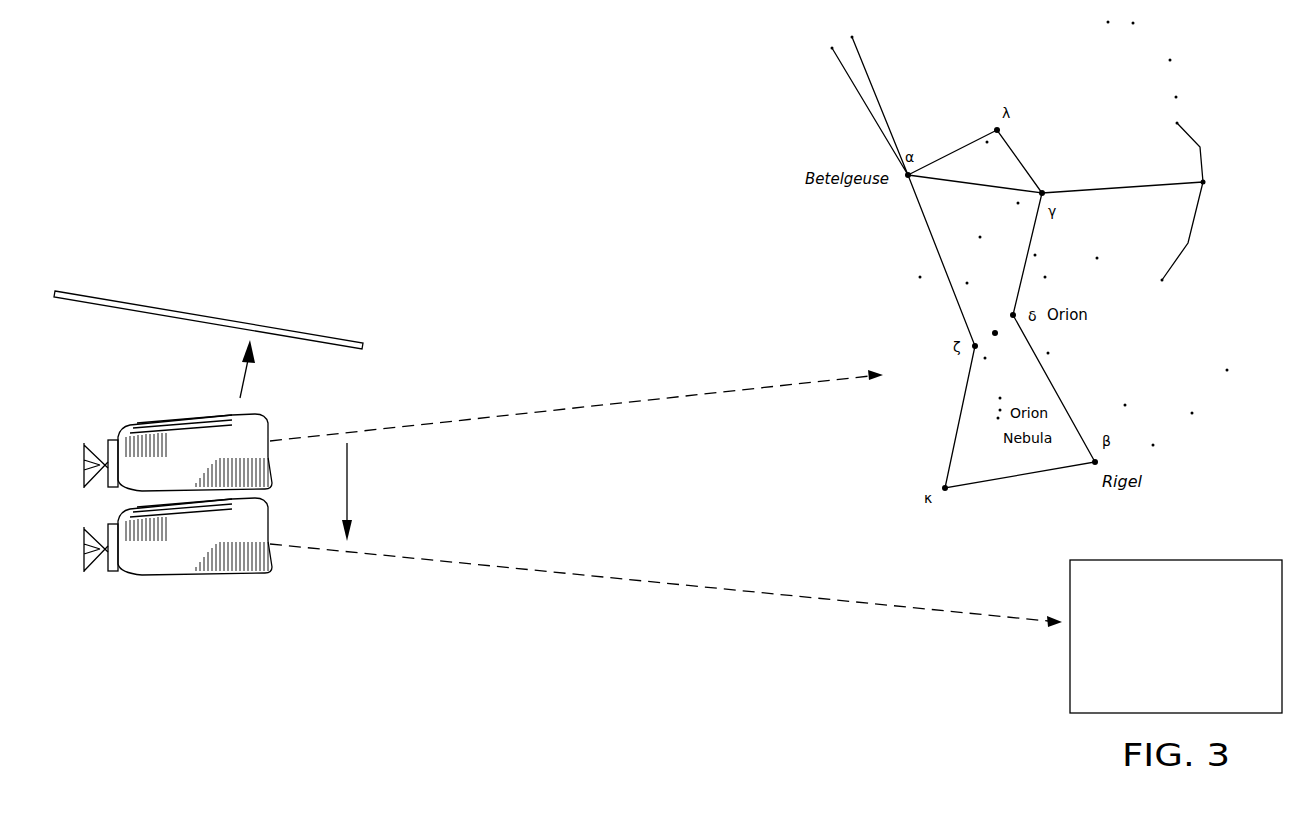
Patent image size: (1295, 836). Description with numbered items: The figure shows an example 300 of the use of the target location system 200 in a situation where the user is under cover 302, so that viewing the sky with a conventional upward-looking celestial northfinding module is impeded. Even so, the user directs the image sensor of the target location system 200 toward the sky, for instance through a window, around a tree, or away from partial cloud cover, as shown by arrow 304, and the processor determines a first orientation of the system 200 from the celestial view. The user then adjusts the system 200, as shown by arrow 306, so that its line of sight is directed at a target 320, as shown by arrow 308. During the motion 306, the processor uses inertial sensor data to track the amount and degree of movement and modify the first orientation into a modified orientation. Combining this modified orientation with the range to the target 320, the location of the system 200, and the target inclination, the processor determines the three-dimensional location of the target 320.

The example of use 300 is at (403, 138).
The target location system 200 is at (164, 392).
The cover 302 is at (226, 292).
The arrow 304 is at (560, 412).
The arrow 306 is at (352, 493).
The arrow 308 is at (663, 585).
The target 320 is at (1196, 666).